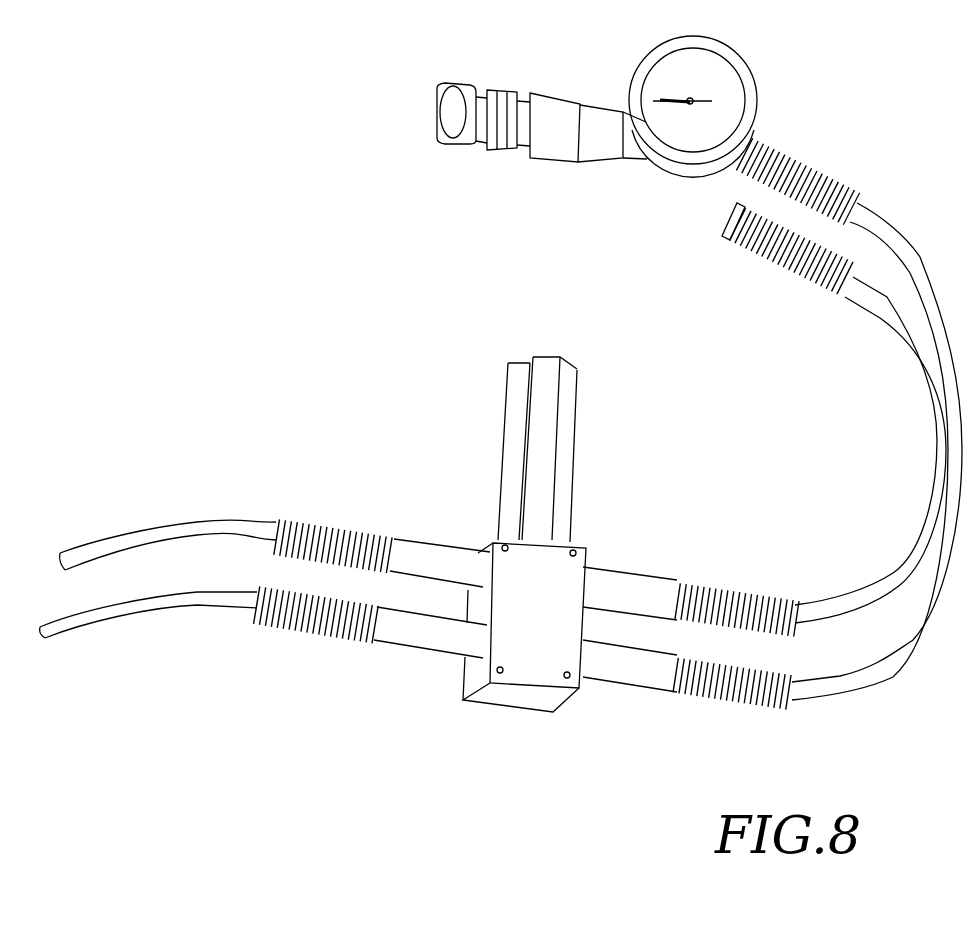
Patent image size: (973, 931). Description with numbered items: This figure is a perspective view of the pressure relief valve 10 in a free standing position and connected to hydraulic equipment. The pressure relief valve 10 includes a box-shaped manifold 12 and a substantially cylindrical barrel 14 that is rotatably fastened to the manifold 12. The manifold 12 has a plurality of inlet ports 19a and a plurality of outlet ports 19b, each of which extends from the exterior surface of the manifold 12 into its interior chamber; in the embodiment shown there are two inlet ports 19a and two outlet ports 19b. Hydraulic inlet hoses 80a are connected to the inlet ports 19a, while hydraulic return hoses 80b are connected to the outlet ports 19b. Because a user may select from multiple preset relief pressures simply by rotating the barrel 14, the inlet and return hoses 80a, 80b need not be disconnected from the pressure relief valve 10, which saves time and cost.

The pressure relief valve 10 is at (378, 692).
The manifold 12 is at (525, 618).
The barrel 14 is at (507, 418).
The inlet ports 19a is at (487, 652).
The outlet ports 19b is at (490, 553).
The hydraulic inlet hoses 80a is at (307, 632).
The hydraulic return hoses 80b is at (348, 522).